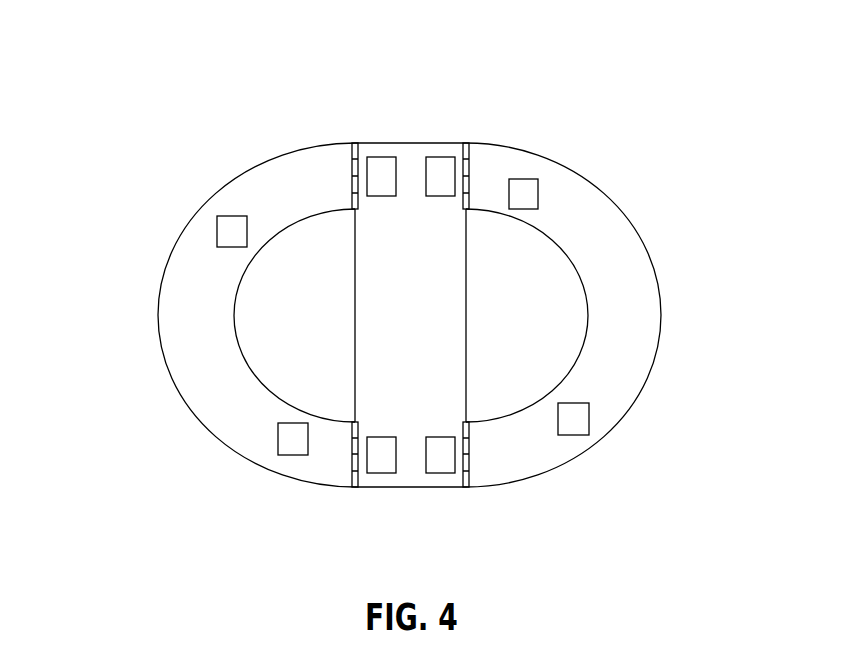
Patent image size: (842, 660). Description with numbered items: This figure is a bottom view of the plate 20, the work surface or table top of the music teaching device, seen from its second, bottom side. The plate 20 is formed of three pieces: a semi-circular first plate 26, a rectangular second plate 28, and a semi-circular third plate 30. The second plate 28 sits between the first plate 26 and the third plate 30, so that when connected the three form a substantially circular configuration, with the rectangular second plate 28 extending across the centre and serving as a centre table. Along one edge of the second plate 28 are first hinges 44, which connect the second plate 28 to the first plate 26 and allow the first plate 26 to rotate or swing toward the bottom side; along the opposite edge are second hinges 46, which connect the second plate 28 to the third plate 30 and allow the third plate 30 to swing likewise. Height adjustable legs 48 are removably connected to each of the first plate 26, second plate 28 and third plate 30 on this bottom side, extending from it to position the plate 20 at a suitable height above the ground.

The plate 20 is at (240, 76).
The first plate 26 is at (178, 362).
The second plate 28 is at (366, 310).
The third plate 30 is at (641, 308).
The first hinges 44 is at (353, 181).
The second hinges 46 is at (469, 158).
The height adjustable legs 48 is at (224, 232).